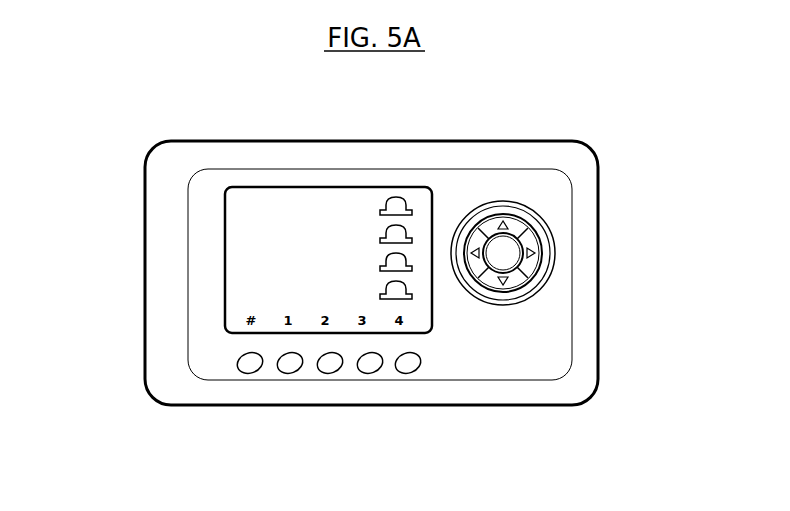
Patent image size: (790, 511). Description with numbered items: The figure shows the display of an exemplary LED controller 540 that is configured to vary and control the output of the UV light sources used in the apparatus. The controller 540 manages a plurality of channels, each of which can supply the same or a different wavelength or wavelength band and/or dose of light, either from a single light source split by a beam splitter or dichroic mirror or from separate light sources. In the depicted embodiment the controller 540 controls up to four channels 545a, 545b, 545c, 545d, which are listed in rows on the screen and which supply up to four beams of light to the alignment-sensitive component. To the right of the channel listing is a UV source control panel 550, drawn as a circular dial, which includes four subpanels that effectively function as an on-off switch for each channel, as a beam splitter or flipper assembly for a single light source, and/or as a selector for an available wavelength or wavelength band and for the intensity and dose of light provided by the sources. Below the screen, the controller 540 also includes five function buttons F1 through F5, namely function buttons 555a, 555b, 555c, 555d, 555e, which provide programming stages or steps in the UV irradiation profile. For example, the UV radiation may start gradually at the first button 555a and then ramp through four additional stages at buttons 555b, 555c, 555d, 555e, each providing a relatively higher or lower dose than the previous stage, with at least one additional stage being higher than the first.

The controller 540 is at (599, 186).
The channel 545a is at (251, 207).
The channel 545b is at (251, 235).
The channel 545c is at (251, 263).
The channel 545d is at (251, 291).
The UV source control panel 550 is at (555, 251).
The function button F1 555a is at (247, 373).
The function button F2 555b is at (287, 373).
The function button F3 555c is at (325, 373).
The function button F4 555d is at (365, 373).
The function button F5 555e is at (402, 373).